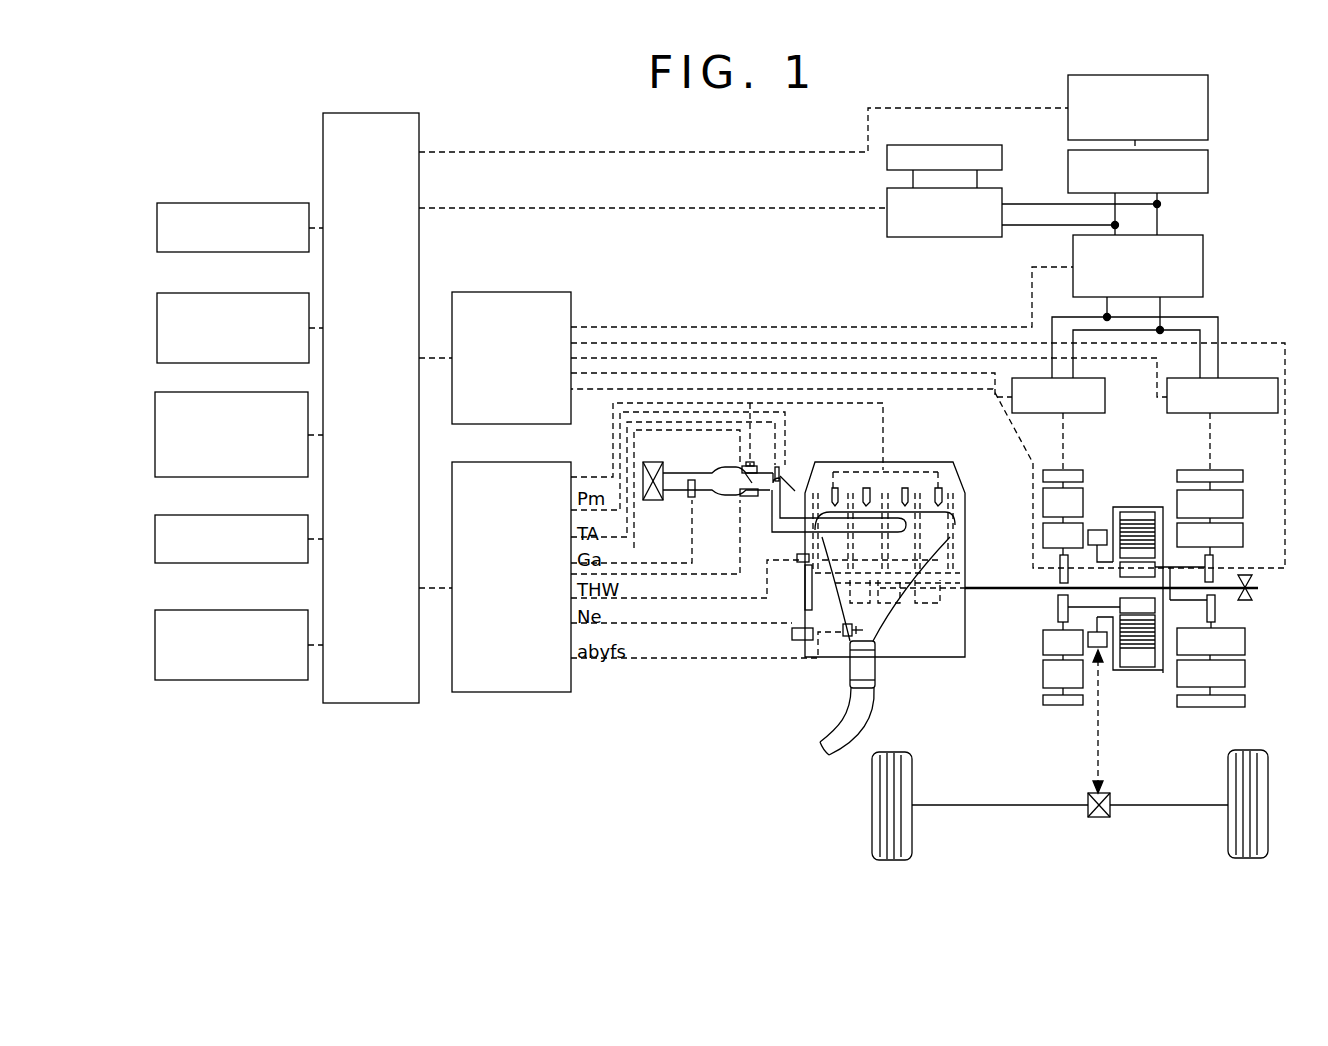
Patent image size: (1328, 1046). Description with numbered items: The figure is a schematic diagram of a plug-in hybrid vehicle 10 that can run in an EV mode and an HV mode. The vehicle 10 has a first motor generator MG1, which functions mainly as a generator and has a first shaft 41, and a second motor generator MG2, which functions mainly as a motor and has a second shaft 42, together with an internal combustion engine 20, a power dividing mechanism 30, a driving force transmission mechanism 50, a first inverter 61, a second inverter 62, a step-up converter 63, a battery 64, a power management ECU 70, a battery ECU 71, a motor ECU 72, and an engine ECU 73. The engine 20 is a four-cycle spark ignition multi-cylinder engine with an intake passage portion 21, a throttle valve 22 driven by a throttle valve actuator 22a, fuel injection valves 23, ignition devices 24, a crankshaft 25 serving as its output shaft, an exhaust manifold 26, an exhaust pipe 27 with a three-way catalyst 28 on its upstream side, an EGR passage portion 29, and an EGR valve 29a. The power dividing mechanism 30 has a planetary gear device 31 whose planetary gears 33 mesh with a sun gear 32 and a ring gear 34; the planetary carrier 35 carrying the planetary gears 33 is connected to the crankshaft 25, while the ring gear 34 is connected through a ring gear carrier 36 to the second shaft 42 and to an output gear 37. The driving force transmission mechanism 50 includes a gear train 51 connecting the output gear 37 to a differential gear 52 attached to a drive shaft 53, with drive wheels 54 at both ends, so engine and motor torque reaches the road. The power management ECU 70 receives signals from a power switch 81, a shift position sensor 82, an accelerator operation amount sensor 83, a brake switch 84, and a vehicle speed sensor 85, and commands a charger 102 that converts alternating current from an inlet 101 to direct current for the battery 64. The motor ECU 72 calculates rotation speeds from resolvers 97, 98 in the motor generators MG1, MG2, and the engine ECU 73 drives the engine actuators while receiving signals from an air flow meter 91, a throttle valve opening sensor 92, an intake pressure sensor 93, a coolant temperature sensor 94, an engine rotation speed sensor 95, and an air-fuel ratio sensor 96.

The vehicle 10 is at (1312, 83).
The internal combustion engine 20 is at (977, 483).
The intake passage portion 21 is at (736, 490).
The throttle valve 22 is at (740, 470).
The throttle valve actuator 22a is at (742, 498).
The fuel injection valve 23 is at (786, 478).
The ignition device 24 is at (948, 470).
The crankshaft 25 is at (1012, 592).
The exhaust manifold 26 is at (890, 603).
The exhaust pipe 27 is at (872, 717).
The three-way catalyst 28 is at (876, 681).
The EGR passage portion 29 is at (851, 484).
The EGR valve 29a is at (775, 516).
The power dividing mechanism 30 is at (1128, 440).
The planetary gear device 31 is at (1140, 500).
The sun gear 32 is at (1160, 567).
The planetary gear 33 is at (1128, 530).
The ring gear 34 is at (1140, 668).
The planetary carrier 35 is at (1157, 510).
The ring gear carrier 36 is at (1163, 672).
The output gear 37 is at (1102, 650).
The first shaft 41 is at (1060, 574).
The second shaft 42 is at (1192, 592).
The driving force transmission mechanism 50 is at (1068, 752).
The gear train 51 is at (1100, 756).
The differential gear 52 is at (1098, 818).
The drive shaft 53 is at (993, 808).
The drive wheel 54 is at (912, 840).
The first inverter 61 is at (1106, 393).
The second inverter 62 is at (1243, 380).
The step-up converter 63 is at (1205, 263).
The battery 64 is at (1210, 165).
The power management ECU 70 is at (372, 113).
The battery ECU 71 is at (1210, 99).
The motor ECU 72 is at (531, 292).
The engine ECU 73 is at (522, 462).
The power switch 81 is at (226, 203).
The shift position sensor 82 is at (226, 293).
The accelerator operation amount sensor 83 is at (226, 392).
The brake switch 84 is at (226, 515).
The vehicle speed sensor 85 is at (226, 610).
The air flow meter 91 is at (688, 497).
The throttle valve opening sensor 92 is at (746, 466).
The intake pressure sensor 93 is at (770, 478).
The coolant temperature sensor 94 is at (800, 563).
The engine rotation speed sensor 95 is at (792, 640).
The air-fuel ratio sensor 96 is at (847, 636).
The resolver 97 is at (1058, 578).
The resolver 98 is at (1214, 568).
The inlet 101 is at (957, 145).
The charger 102 is at (957, 238).
The first motor generator MG1 is at (1084, 460).
The second motor generator MG2 is at (1191, 463).